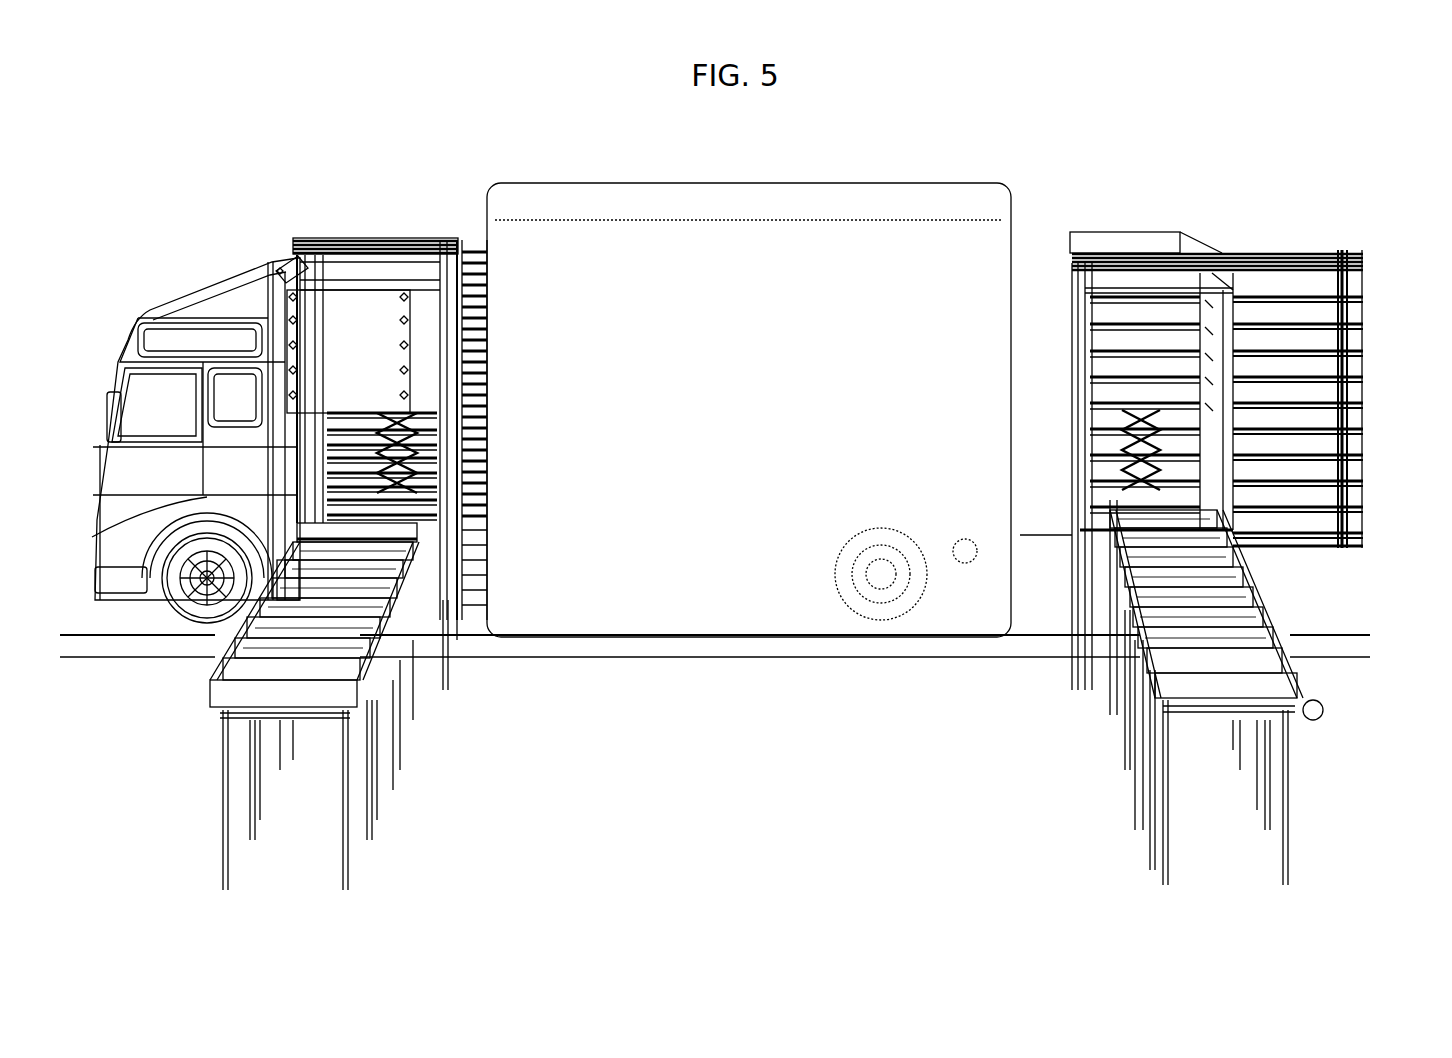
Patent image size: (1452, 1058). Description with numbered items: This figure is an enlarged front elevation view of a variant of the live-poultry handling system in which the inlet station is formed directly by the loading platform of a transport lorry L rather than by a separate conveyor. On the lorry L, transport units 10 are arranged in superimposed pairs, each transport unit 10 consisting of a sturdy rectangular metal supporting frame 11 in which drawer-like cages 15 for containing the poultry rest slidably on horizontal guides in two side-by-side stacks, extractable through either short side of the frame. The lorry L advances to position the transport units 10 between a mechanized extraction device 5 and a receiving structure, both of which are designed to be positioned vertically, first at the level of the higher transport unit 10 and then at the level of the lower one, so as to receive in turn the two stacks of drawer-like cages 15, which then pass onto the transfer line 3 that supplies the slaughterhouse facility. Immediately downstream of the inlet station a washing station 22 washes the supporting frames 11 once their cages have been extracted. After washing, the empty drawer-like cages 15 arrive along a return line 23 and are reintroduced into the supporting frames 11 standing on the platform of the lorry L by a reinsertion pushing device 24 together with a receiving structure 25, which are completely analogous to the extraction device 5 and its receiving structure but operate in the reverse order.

The transport lorry L is at (191, 256).
The receiving structure 25 is at (296, 262).
The reinsertion pushing device 24 is at (340, 330).
The supporting frame 11 is at (402, 240).
The washing station 22 is at (880, 196).
The mechanized extraction device 5 is at (1103, 232).
The transport unit 10 is at (1287, 358).
The drawer-like cages 15 is at (348, 587).
The return line 23 is at (188, 698).
The transfer line 3 is at (1337, 690).